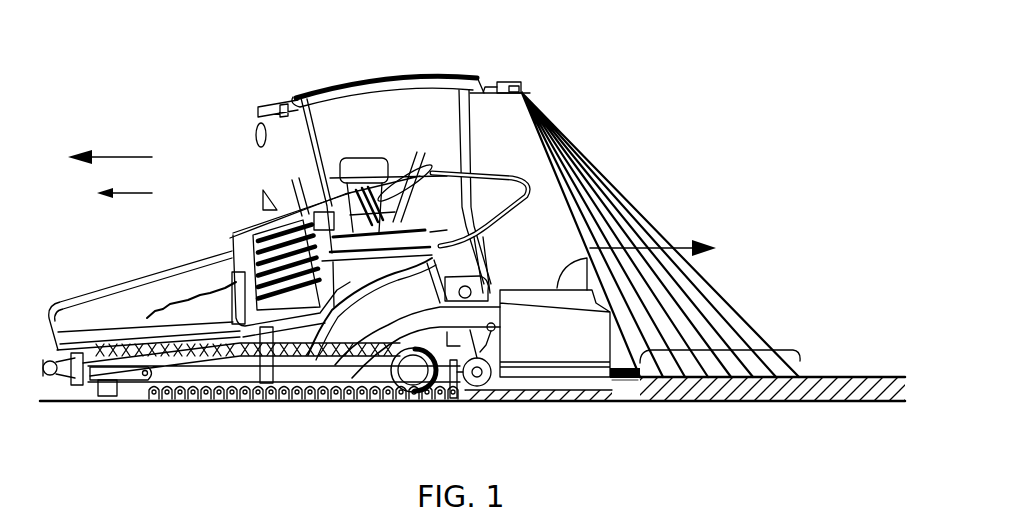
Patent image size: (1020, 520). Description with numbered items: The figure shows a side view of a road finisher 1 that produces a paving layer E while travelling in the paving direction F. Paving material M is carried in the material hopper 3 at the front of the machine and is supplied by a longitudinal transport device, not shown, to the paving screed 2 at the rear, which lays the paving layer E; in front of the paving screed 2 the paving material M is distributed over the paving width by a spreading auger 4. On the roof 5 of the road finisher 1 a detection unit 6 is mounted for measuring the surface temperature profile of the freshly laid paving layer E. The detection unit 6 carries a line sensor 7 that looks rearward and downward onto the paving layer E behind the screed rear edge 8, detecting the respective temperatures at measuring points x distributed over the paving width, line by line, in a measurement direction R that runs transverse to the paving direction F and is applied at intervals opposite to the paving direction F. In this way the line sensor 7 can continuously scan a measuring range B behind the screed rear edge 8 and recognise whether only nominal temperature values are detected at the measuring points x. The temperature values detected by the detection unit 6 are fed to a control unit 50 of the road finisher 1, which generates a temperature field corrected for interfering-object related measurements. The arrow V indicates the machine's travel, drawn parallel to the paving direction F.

The road finisher 1 is at (437, 46).
The paving screed 2 is at (559, 349).
The material hopper 3 is at (103, 296).
The spreading auger 4 is at (477, 395).
The roof 5 is at (336, 80).
The detection unit 6 is at (507, 81).
The line sensor 7 is at (522, 90).
The screed rear edge 8 is at (617, 380).
The control unit 50 is at (298, 222).
The paving direction F is at (110, 147).
The travel speed V is at (124, 181).
The paving material M is at (153, 314).
The measurement direction R is at (645, 247).
The measuring range B is at (720, 343).
The paving layer E is at (881, 376).
The measuring points x is at (637, 380).